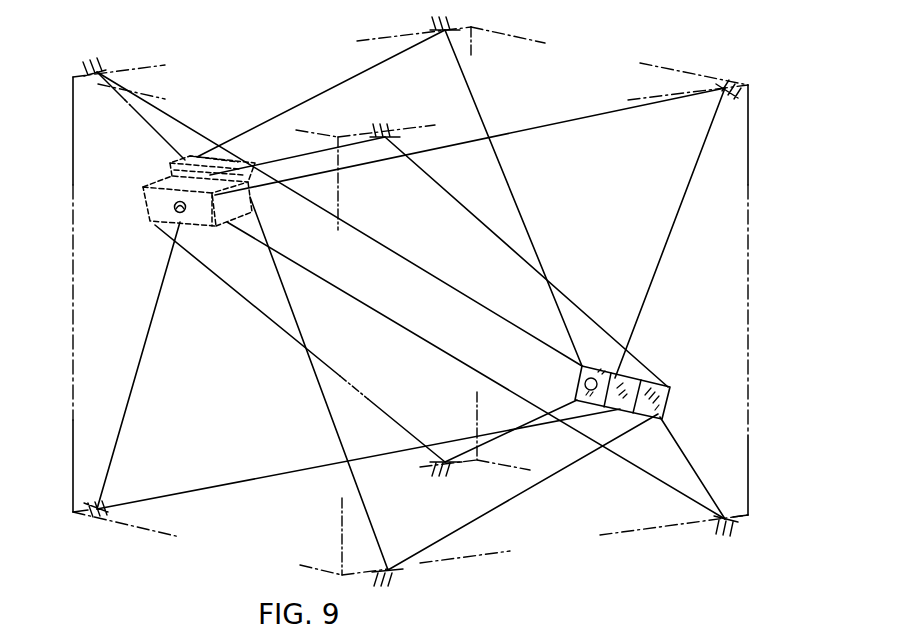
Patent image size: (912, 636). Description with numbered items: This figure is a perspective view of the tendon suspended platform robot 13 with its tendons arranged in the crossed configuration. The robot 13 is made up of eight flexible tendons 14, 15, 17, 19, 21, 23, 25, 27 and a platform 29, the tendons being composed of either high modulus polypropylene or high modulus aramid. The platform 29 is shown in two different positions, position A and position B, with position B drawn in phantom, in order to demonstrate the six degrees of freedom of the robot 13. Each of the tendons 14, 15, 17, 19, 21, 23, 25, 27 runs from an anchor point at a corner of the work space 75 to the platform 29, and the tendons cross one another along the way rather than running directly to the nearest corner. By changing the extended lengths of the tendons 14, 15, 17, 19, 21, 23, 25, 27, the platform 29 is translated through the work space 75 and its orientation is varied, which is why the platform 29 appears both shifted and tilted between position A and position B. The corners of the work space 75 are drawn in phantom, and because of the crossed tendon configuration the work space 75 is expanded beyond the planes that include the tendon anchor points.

The tendon suspended platform robot 13 is at (683, 22).
The flexible tendon 14 is at (566, 296).
The flexible tendon 15 is at (542, 486).
The flexible tendon 17 is at (678, 462).
The flexible tendon 19 is at (574, 117).
The flexible tendon 21 is at (263, 313).
The flexible tendon 23 is at (321, 93).
The flexible tendon 25 is at (114, 96).
The flexible tendon 27 is at (154, 310).
The platform 29 is at (670, 401).
The work space 75 is at (751, 477).
The position A is at (654, 354).
The position B is at (134, 206).